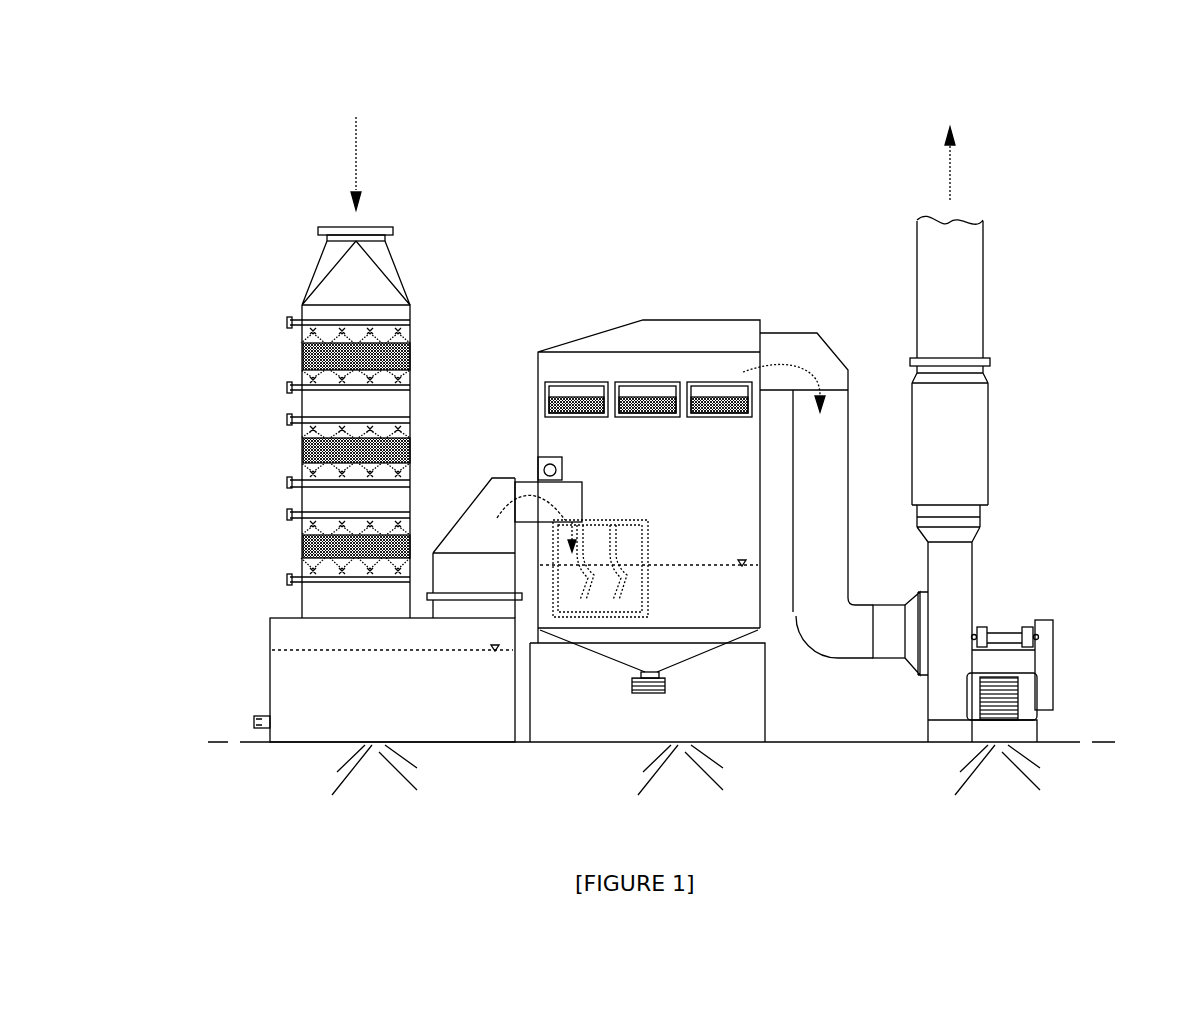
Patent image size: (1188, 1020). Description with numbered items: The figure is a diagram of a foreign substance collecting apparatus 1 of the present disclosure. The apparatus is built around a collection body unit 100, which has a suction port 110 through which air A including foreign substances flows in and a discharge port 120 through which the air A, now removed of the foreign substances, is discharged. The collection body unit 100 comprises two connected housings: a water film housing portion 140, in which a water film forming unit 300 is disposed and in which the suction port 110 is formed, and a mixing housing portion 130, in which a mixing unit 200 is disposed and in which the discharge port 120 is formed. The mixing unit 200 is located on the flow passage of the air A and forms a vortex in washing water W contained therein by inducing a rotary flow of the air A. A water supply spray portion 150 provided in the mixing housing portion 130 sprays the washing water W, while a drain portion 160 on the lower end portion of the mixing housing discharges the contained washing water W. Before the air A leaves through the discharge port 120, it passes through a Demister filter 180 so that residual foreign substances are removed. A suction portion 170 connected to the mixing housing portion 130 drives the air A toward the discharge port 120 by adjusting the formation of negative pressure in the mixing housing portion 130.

The foreign substance collecting apparatus 1 is at (233, 88).
The collection body unit 100 is at (700, 282).
The suction port 110 is at (384, 228).
The discharge port 120 is at (958, 225).
The mixing housing portion 130 is at (617, 338).
The water film housing portion 140 is at (411, 305).
The water supply spray portion 150 is at (537, 463).
The drain portion 160 is at (612, 648).
The suction portion 170 is at (1003, 672).
The Demister filter 180 is at (563, 396).
The mixing unit 200 is at (660, 505).
The water film forming unit 300 is at (350, 470).
The air A is at (356, 140).
The washing water W is at (745, 608).